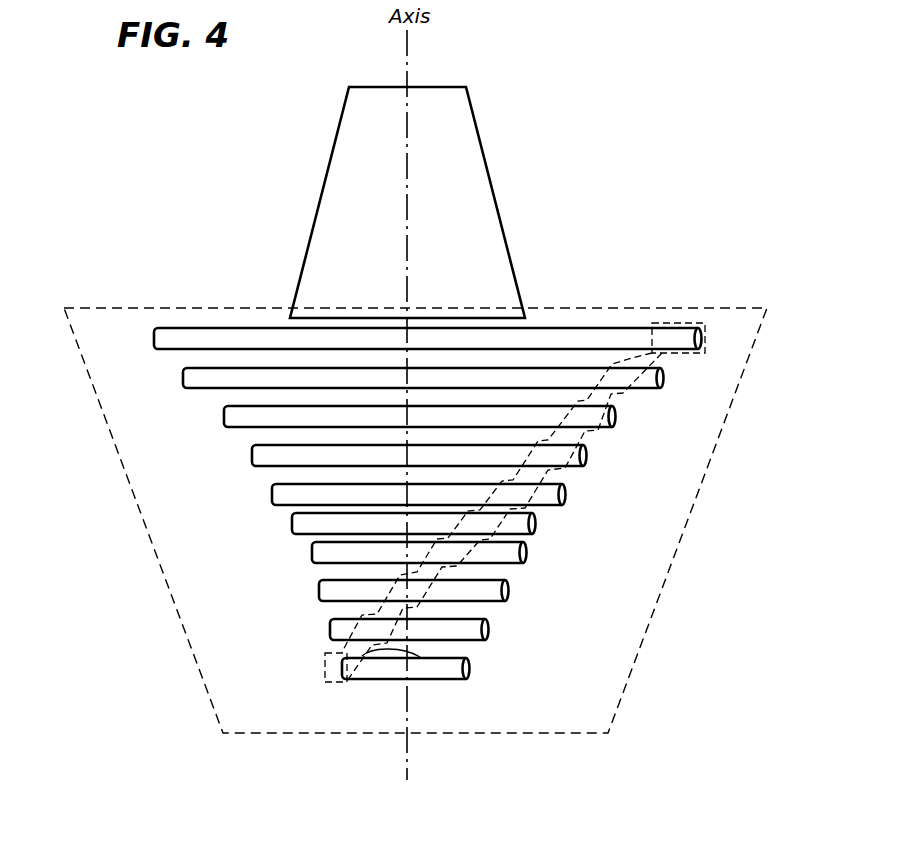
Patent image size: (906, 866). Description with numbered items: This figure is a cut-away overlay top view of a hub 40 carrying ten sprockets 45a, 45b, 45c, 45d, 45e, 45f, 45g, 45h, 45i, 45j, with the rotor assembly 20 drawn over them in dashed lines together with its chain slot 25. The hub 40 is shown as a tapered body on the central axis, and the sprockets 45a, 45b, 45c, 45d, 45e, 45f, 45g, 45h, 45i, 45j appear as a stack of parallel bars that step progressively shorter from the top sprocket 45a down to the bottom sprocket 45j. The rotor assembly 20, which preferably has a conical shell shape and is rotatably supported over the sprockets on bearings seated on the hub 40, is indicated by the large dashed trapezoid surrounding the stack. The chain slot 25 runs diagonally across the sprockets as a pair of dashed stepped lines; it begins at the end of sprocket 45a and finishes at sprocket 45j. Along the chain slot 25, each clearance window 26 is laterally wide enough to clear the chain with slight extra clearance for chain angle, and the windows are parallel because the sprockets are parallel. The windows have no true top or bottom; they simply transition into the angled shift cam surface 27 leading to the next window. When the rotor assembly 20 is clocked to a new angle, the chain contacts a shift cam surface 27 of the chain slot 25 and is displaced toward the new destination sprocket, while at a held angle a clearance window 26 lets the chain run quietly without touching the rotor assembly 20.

The hub 40 is at (525, 150).
The rotor assembly 20 is at (141, 515).
The chain slot 25 is at (690, 318).
The clearance window 26 is at (333, 684).
The shift cam surface 27 is at (420, 657).
The sprocket 45a is at (703, 338).
The sprocket 45b is at (184, 376).
The sprocket 45c is at (615, 413).
The sprocket 45d is at (251, 454).
The sprocket 45e is at (567, 493).
The sprocket 45f is at (292, 520).
The sprocket 45g is at (528, 550).
The sprocket 45h is at (319, 587).
The sprocket 45i is at (490, 628).
The sprocket 45j is at (342, 663).